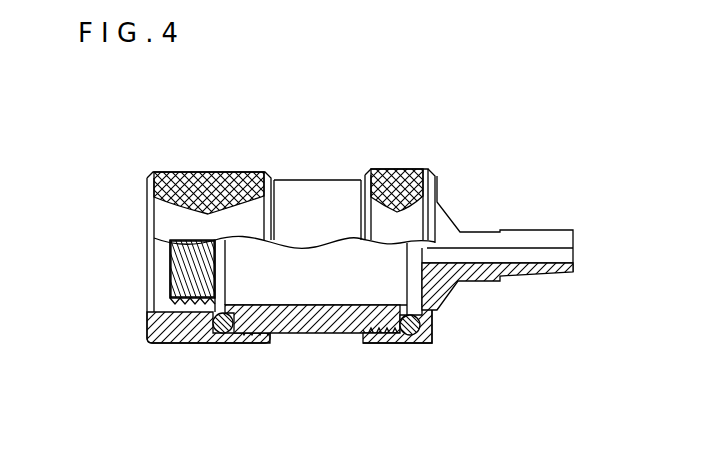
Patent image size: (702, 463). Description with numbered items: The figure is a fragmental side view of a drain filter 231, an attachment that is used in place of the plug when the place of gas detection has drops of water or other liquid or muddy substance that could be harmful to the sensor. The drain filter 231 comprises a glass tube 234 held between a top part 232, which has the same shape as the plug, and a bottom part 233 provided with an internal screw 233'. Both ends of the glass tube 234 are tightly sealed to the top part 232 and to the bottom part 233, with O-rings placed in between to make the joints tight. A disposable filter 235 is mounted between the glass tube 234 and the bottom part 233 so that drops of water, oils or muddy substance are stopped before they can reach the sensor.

The drain filter 231 is at (443, 195).
The top part 232 is at (404, 196).
The bottom part 233 is at (209, 261).
The internal screw 233' is at (131, 286).
The glass tube 234 is at (318, 198).
The disposable filter 235 is at (227, 267).